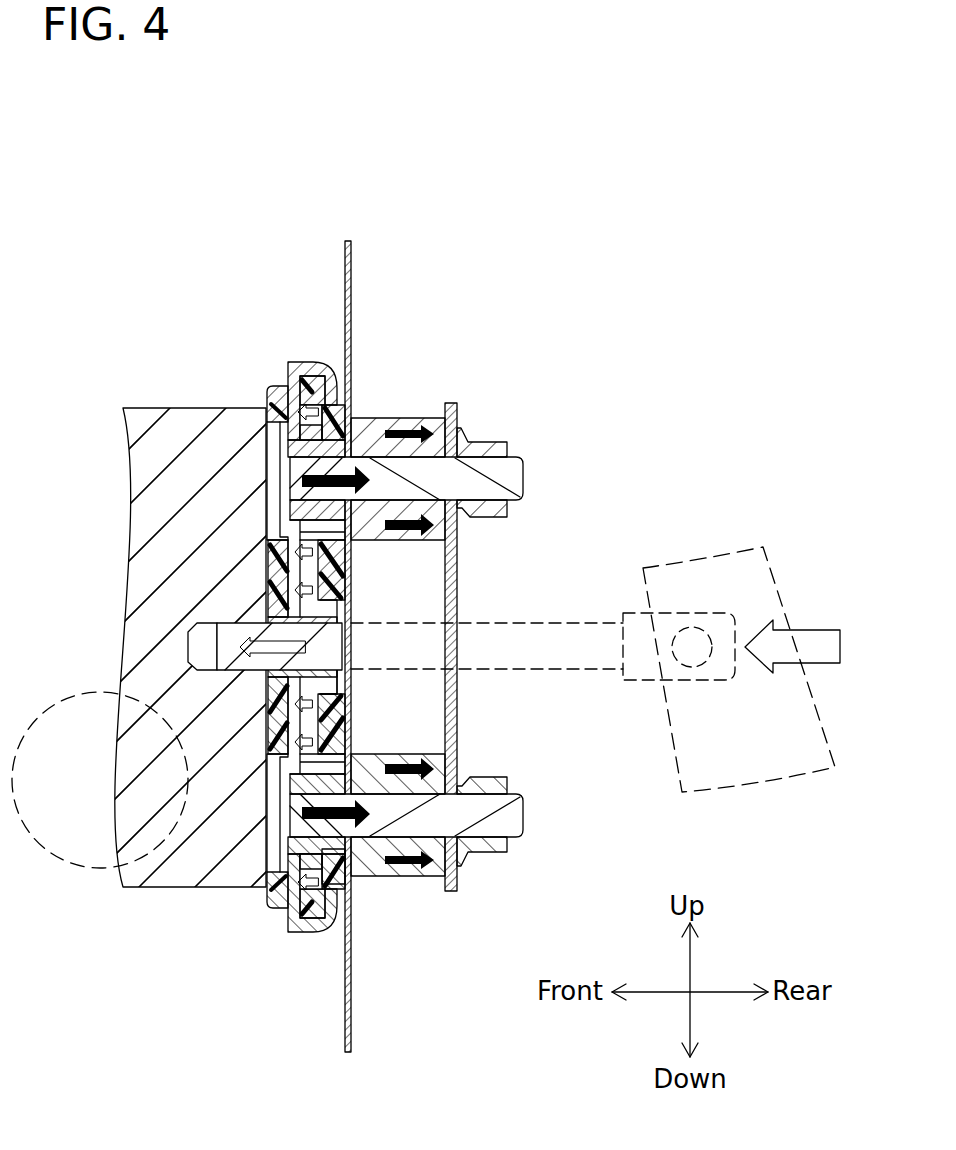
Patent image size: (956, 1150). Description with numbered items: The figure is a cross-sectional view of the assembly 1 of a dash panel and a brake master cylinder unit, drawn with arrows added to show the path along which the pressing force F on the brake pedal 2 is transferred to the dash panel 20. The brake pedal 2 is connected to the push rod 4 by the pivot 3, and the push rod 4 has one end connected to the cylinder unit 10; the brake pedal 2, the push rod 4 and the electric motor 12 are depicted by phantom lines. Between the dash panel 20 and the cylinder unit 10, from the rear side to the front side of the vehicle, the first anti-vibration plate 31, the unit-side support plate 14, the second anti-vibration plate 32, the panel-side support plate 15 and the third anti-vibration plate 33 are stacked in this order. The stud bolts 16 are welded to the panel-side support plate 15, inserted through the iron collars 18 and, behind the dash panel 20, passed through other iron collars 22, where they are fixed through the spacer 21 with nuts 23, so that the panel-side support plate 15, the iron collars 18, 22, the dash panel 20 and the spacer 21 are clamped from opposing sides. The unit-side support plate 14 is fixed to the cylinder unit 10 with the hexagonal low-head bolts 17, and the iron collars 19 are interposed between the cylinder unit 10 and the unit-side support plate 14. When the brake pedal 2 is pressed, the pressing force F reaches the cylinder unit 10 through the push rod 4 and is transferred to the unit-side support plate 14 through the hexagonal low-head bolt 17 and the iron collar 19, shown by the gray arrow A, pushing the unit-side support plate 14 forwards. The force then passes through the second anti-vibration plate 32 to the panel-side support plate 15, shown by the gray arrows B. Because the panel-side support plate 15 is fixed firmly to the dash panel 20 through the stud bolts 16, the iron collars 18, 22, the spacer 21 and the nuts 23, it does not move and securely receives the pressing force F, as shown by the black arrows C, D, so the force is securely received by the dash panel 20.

The assembly 1 is at (146, 224).
The brake pedal 2 is at (725, 562).
The pivot 3 is at (690, 666).
The push rod 4 is at (565, 623).
The cylinder unit 10 is at (148, 413).
The electric motor 12 is at (75, 866).
The unit-side support plate 14 is at (300, 372).
The panel-side support plate 15 is at (272, 390).
The stud bolts 16 is at (520, 476).
The hexagonal low-head bolts 17 is at (340, 645).
The iron collars 18 is at (332, 410).
The iron collars 19 is at (345, 690).
The dash panel 20 is at (352, 262).
The spacer 21 is at (457, 585).
The iron collars 22 is at (385, 420).
The nuts 23 is at (490, 432).
The first anti-vibration plate 31 is at (336, 925).
The second anti-vibration plate 32 is at (286, 915).
The third anti-vibration plate 33 is at (268, 893).
The gray arrow A is at (242, 636).
The gray arrows B is at (268, 410).
The black arrow C is at (352, 472).
The black arrow D is at (445, 412).
The pressing force F is at (803, 646).